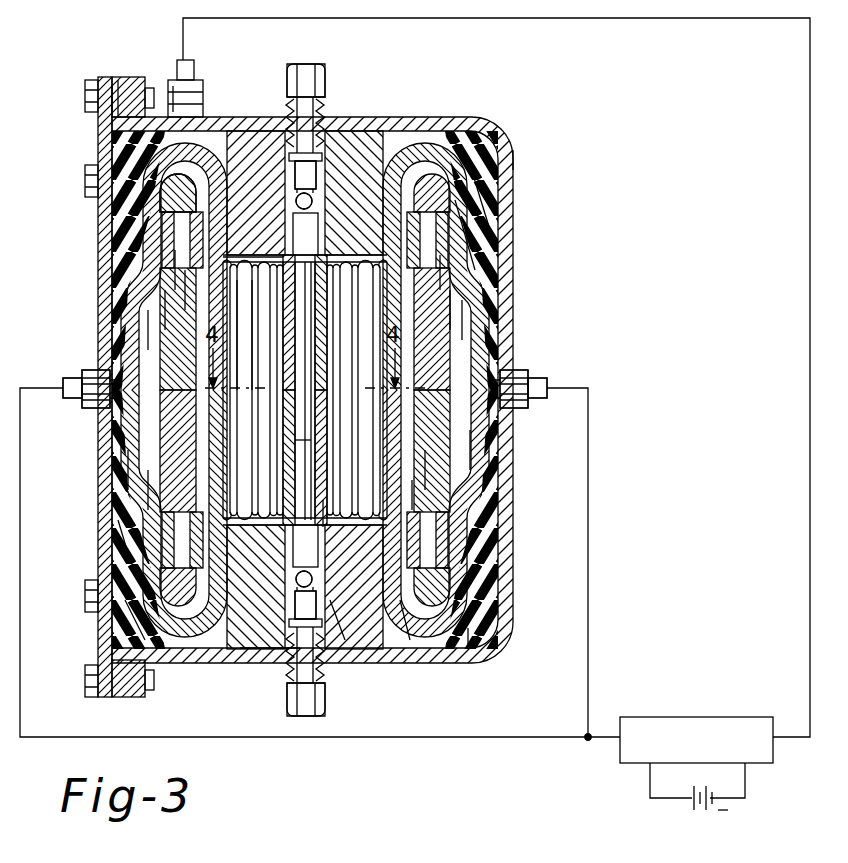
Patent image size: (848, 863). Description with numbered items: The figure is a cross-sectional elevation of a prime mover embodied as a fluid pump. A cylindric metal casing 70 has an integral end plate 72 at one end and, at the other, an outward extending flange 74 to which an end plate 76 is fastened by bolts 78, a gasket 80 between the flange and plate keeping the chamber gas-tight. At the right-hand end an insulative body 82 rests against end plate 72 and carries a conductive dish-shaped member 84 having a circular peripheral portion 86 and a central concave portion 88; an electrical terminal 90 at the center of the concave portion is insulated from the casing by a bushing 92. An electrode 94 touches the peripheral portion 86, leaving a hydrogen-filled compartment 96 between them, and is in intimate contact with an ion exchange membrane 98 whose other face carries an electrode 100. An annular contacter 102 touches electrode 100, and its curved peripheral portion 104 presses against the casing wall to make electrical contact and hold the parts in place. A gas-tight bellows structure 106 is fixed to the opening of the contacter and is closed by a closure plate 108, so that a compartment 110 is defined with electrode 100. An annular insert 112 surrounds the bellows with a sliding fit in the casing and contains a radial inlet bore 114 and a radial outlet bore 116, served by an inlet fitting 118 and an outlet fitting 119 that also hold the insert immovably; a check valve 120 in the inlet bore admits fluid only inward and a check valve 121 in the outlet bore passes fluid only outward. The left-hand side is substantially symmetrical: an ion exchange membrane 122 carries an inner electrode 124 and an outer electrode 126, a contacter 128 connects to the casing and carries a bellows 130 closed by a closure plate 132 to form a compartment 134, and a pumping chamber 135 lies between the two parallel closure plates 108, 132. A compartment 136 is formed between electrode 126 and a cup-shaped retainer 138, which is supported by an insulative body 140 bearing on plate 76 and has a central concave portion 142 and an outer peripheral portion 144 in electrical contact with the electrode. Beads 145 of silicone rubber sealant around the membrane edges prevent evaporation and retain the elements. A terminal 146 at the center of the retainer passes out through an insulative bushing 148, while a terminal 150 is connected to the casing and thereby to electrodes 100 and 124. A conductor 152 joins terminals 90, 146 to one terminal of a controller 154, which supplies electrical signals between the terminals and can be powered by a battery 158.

The casing 70 is at (447, 117).
The end plate 72 is at (513, 158).
The flange 74 is at (128, 77).
The end plate 76 is at (98, 137).
The bolts 78 is at (85, 92).
The gasket 80 is at (116, 80).
The insulative body 82 is at (482, 183).
The dish-shaped member 84 is at (478, 450).
The peripheral portion 86 is at (465, 229).
The concave portion 88 is at (466, 275).
The electrical terminal 90 is at (541, 380).
The bushing 92 is at (516, 370).
The electrode 94 is at (448, 300).
The compartment 96 is at (462, 323).
The ion exchange membrane 98 is at (425, 472).
The electrode 100 is at (412, 492).
The annular contacter 102 is at (390, 612).
The curved peripheral portion 104 is at (410, 660).
The bellows structure 106 is at (345, 500).
The closure plate 108 is at (335, 432).
The compartment 110 is at (347, 394).
The annular insert 112 is at (262, 650).
The inlet bore 114 is at (310, 556).
The outlet bore 116 is at (310, 176).
The inlet fitting 118 is at (325, 707).
The outlet fitting 119 is at (325, 74).
The check valve 120 is at (310, 579).
The check valve 121 is at (310, 200).
The ion exchange membrane 122 is at (183, 264).
The electrode 124 is at (192, 288).
The electrode 126 is at (165, 311).
The contacter 128 is at (196, 150).
The bellows 130 is at (275, 280).
The closure plate 132 is at (270, 333).
The compartment 134 is at (265, 372).
The pumping chamber 135 is at (325, 460).
The compartment 136 is at (146, 334).
The cup-shaped retainer 138 is at (130, 464).
The insulative body 140 is at (122, 525).
The concave portion 142 is at (150, 487).
The peripheral portion 144 is at (138, 633).
The beads 145 is at (163, 650).
The terminal 146 is at (70, 380).
The insulative bushing 148 is at (90, 408).
The terminal 150 is at (196, 66).
The conductor 152 is at (586, 745).
The controller 154 is at (662, 717).
The battery 158 is at (694, 808).